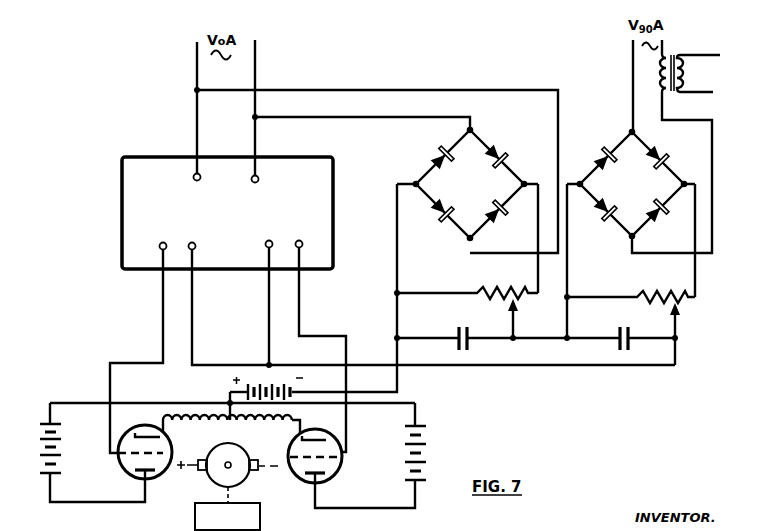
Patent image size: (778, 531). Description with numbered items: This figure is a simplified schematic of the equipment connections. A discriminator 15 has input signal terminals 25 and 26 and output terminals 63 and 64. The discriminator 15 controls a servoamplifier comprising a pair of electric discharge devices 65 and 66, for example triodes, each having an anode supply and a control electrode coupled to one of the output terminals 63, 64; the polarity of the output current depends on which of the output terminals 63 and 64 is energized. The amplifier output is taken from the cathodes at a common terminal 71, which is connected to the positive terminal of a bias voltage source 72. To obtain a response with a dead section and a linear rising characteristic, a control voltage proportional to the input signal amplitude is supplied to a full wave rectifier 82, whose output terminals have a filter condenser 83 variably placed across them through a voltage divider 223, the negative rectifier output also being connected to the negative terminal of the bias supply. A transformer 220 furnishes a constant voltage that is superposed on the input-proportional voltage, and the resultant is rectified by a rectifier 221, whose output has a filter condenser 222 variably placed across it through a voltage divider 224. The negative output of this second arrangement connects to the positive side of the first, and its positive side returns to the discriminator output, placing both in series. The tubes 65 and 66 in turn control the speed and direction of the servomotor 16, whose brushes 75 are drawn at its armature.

The discriminator 15 is at (227, 213).
The input signal terminal 25 is at (193, 177).
The input signal terminal 26 is at (259, 179).
The output terminal 64 is at (177, 249).
The output terminal 63 is at (291, 250).
The full wave rectifier 82 is at (500, 172).
The rectifier 221 is at (658, 170).
The transformer 220 is at (679, 53).
The voltage divider 223 is at (531, 300).
The voltage divider 224 is at (690, 299).
The filter condenser 83 is at (459, 342).
The filter condenser 222 is at (619, 340).
The bias voltage source 72 is at (301, 384).
The common terminal 71 is at (225, 411).
The electric discharge device 66 is at (128, 463).
The electric discharge device 65 is at (333, 466).
The servomotor 16 is at (249, 452).
The motor brushes 75 is at (202, 471).